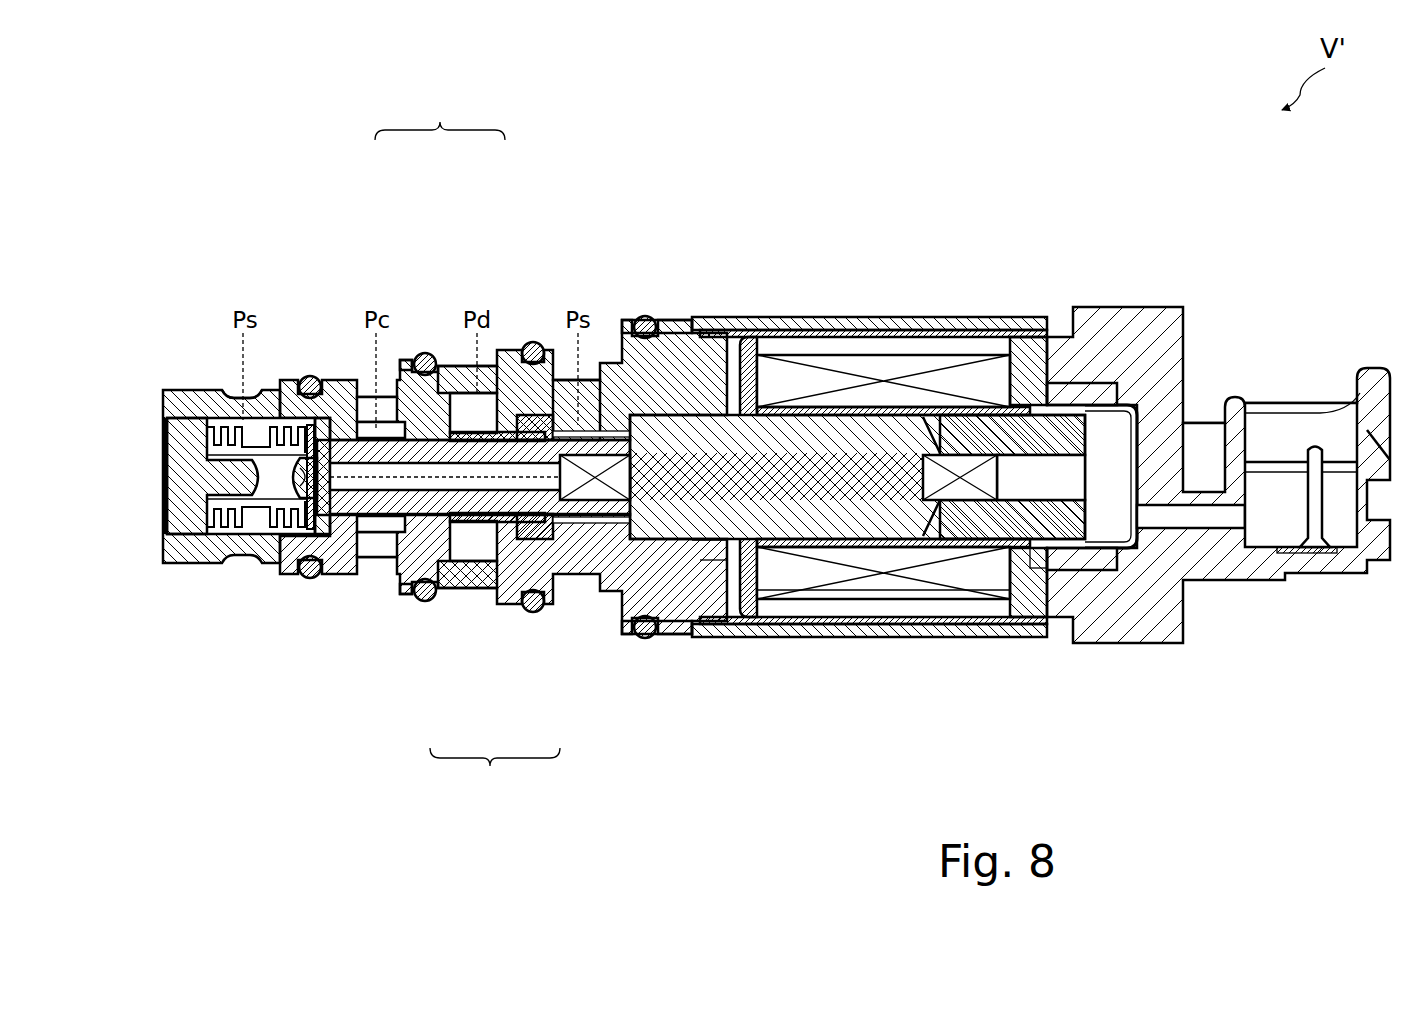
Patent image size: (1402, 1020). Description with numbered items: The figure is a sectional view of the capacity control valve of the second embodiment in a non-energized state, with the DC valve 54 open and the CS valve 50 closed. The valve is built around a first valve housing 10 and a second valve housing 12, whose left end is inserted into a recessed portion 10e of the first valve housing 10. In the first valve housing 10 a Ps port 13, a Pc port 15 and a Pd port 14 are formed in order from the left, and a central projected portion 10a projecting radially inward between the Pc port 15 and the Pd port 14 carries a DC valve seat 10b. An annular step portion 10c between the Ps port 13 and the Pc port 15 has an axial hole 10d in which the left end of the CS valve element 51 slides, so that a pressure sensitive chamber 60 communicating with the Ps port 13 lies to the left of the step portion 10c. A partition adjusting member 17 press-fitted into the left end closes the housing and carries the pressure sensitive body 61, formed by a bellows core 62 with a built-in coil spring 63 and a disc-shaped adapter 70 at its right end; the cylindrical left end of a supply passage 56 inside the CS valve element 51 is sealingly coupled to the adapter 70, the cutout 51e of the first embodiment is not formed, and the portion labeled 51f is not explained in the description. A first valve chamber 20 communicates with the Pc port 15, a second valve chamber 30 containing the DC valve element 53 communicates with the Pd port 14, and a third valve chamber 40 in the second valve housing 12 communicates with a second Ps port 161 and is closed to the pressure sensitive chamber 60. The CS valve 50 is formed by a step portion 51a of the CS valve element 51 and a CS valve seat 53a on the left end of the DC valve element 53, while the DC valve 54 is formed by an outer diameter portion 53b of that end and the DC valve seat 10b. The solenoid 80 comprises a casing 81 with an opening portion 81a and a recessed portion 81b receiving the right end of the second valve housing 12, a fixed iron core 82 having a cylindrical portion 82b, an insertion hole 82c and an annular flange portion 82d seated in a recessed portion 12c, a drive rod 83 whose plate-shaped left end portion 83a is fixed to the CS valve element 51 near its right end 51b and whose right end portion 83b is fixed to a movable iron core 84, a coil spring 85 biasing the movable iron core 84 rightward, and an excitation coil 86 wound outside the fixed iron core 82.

The first valve housing 10 is at (175, 384).
The pressure sensitive chamber 60 is at (190, 388).
The Ps port 13 is at (236, 396).
The partition adjusting member 17 is at (168, 440).
The pressure sensitive body 61 is at (213, 540).
The bellows core 62 is at (245, 560).
The coil spring 63 is at (283, 560).
The adapter 70 is at (305, 580).
The step portion 10c is at (314, 582).
The CS valve element 51 is at (235, 488).
The rod end portion 51f is at (235, 472).
The cutout 51e is at (312, 455).
The supply passage 56 is at (395, 482).
The Pc port 15 is at (374, 420).
The first valve chamber 20 is at (418, 351).
The axial hole 10d is at (395, 600).
The central projected portion 10a is at (420, 603).
The Pd port 14 is at (487, 392).
The DC valve 54 is at (440, 113).
The outer diameter portion 53b is at (450, 432).
The DC valve seat 10b is at (458, 395).
The CS valve seat 53a is at (465, 525).
The step portion 51a is at (500, 530).
The CS valve 50 is at (495, 772).
The second valve chamber 30 is at (540, 350).
The DC valve element 53 is at (526, 605).
The recessed portion 10e is at (585, 605).
The second Ps port 161 is at (605, 400).
The third valve chamber 40 is at (645, 356).
The recessed portion 12c is at (647, 640).
The second valve housing 12 is at (605, 612).
The axially right end 51b is at (660, 430).
The axially left end portion 83a is at (705, 430).
The drive rod 83 is at (960, 370).
The axially right end portion 83b is at (1040, 385).
The casing 81 is at (682, 648).
The flange portion 82d is at (740, 330).
The fixed iron core 82 is at (830, 355).
The insertion hole 82c is at (882, 440).
The cylindrical portion 82b is at (905, 440).
The movable iron core 84 is at (1033, 640).
The coil spring 85 is at (965, 600).
The excitation coil 86 is at (895, 600).
The opening portion 81a is at (765, 650).
The recessed portion 81b is at (700, 570).
The solenoid 80 is at (1142, 300).